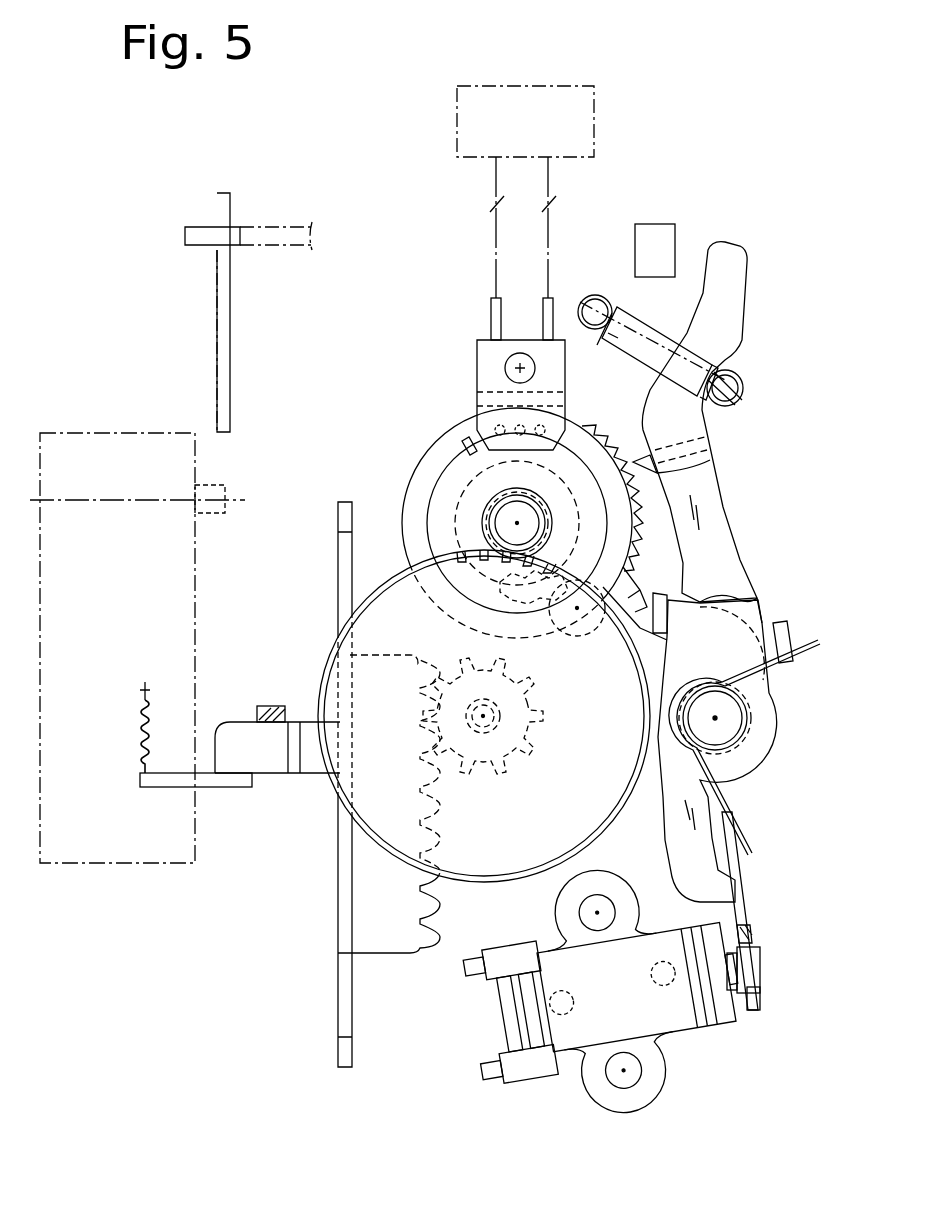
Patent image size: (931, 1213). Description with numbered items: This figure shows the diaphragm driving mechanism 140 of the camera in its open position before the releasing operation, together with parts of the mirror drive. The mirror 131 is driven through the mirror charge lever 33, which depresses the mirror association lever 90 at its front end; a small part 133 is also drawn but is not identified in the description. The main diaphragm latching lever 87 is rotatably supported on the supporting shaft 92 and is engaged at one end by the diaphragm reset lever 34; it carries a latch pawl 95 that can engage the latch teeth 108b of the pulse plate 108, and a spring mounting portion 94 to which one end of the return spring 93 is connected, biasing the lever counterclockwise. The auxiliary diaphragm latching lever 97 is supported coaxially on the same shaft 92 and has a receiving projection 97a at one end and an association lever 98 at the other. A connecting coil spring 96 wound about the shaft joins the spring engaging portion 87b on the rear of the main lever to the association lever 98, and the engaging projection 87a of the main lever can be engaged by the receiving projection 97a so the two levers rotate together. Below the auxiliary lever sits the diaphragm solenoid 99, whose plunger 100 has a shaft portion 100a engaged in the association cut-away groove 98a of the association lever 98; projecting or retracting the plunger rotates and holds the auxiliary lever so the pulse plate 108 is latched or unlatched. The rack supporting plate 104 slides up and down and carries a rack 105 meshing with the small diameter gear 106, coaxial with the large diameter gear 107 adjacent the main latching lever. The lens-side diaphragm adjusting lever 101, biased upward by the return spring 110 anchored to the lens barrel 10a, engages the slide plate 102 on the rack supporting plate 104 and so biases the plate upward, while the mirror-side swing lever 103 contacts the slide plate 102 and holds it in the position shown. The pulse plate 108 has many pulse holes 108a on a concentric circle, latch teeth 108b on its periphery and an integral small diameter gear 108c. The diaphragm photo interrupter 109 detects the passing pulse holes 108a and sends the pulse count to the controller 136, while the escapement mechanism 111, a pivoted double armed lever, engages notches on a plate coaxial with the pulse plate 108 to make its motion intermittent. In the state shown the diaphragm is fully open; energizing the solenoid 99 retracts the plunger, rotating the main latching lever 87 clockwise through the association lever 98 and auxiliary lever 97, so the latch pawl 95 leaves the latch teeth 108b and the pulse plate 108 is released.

The controller 136 is at (598, 111).
The diaphragm driving mechanism 140 is at (735, 180).
The diaphragm reset lever 34 is at (653, 230).
The mirror charge lever 33 is at (285, 228).
The mirror association lever 90 is at (230, 326).
The mirror 131 is at (195, 616).
The projection 133 is at (227, 510).
The lens barrel 10a is at (145, 690).
The return spring 110 is at (138, 735).
The diaphragm adjusting lever 101 is at (232, 788).
The slide plate 102 is at (232, 726).
The swing lever 103 is at (270, 706).
The rack supporting plate 104 is at (340, 872).
The rack 105 is at (440, 912).
The small diameter gear 106 is at (490, 775).
The large diameter gear 107 is at (372, 808).
The pulse plate 108 is at (464, 420).
The pulse holes 108a is at (464, 443).
The latch teeth 108b is at (612, 442).
The small diameter gear 108c is at (484, 520).
The diaphragm photo interrupter 109 is at (480, 368).
The escapement mechanism 111 is at (647, 575).
The main diaphragm latching lever 87 is at (748, 297).
The engaging projection 87a is at (752, 608).
The spring engaging portion 87b is at (790, 640).
The return spring 93 is at (636, 312).
The spring mounting portion 94 is at (742, 388).
The latch pawl 95 is at (712, 462).
The connecting coil spring 96 is at (818, 645).
The auxiliary diaphragm latching lever 97 is at (668, 852).
The receiving projection 97a is at (633, 652).
The supporting shaft 92 is at (735, 724).
The association lever 98 is at (750, 906).
The association cut-away groove 98a is at (762, 1004).
The diaphragm solenoid 99 is at (712, 1032).
The plunger 100 is at (760, 955).
The shaft portion 100a is at (746, 996).